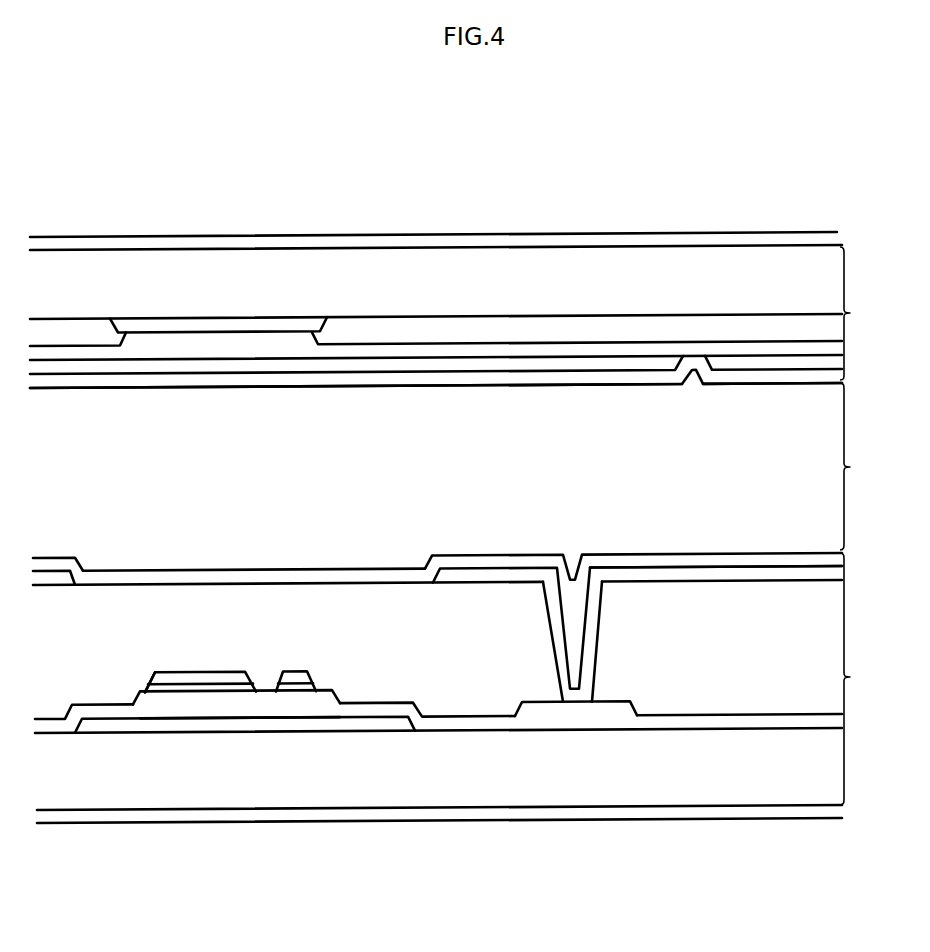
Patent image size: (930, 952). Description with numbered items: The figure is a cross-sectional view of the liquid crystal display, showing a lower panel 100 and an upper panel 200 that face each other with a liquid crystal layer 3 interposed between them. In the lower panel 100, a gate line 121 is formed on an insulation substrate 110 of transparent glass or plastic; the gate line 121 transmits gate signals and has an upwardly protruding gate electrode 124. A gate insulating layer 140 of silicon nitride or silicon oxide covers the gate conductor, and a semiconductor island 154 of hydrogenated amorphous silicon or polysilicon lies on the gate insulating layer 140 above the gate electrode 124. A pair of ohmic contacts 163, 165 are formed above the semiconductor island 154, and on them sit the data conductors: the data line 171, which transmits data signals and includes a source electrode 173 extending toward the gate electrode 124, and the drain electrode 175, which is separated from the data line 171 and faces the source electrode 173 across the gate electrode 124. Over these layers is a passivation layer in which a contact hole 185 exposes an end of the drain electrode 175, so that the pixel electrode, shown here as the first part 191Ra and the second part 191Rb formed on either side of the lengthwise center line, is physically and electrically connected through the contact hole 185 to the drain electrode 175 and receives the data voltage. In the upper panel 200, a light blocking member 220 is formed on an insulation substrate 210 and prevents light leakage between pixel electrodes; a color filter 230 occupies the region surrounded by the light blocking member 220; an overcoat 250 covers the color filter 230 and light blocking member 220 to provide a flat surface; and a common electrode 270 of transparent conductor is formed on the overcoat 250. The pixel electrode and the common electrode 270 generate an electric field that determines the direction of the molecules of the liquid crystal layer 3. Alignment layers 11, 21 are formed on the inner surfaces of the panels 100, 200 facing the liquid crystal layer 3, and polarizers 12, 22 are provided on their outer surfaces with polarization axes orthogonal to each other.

The polarizer 22 is at (827, 240).
The upper panel 200 is at (458, 301).
The insulation substrate 210 is at (333, 275).
The light blocking member 220 is at (218, 327).
The color filter 230 is at (488, 330).
The overcoat 250 is at (568, 350).
The common electrode 270 is at (637, 362).
The alignment layer 21 is at (622, 378).
The liquid crystal layer 3 is at (452, 477).
The lower panel 100 is at (461, 692).
The alignment layer 11 is at (627, 562).
The first part of pixel electrode 191Ra is at (55, 578).
The second part of pixel electrode 191Rb is at (478, 580).
The contact hole 185 is at (550, 610).
The drain electrode 175 is at (292, 677).
The source electrode 173 is at (216, 678).
The data line 171 is at (160, 681).
The ohmic contact 163 is at (183, 687).
The ohmic contact 165 is at (309, 687).
The semiconductor island 154 is at (200, 698).
The gate insulating layer 140 is at (660, 722).
The gate line 121 is at (95, 727).
The gate electrode 124 is at (256, 725).
The insulation substrate 110 is at (462, 778).
The polarizer 12 is at (832, 811).